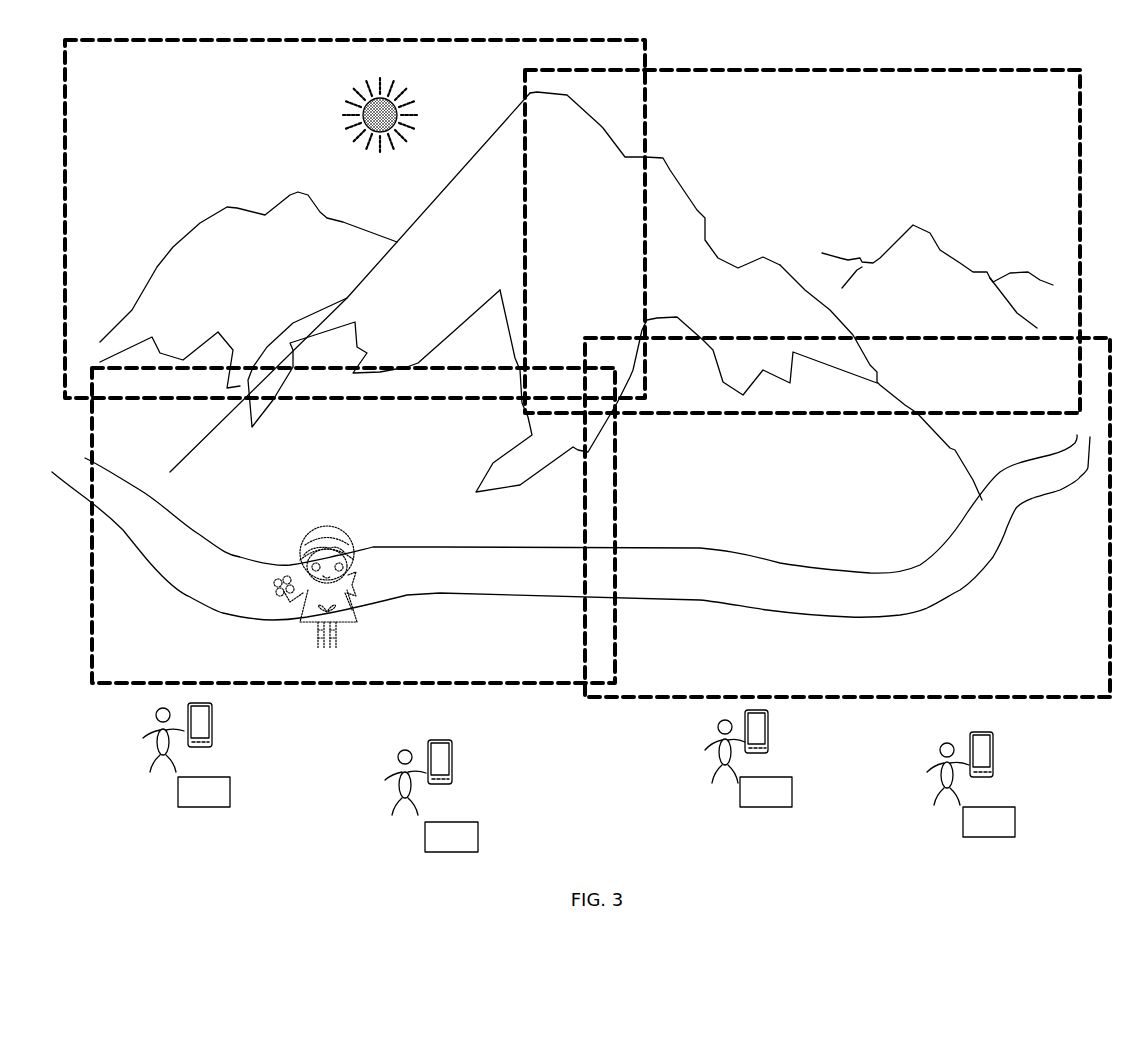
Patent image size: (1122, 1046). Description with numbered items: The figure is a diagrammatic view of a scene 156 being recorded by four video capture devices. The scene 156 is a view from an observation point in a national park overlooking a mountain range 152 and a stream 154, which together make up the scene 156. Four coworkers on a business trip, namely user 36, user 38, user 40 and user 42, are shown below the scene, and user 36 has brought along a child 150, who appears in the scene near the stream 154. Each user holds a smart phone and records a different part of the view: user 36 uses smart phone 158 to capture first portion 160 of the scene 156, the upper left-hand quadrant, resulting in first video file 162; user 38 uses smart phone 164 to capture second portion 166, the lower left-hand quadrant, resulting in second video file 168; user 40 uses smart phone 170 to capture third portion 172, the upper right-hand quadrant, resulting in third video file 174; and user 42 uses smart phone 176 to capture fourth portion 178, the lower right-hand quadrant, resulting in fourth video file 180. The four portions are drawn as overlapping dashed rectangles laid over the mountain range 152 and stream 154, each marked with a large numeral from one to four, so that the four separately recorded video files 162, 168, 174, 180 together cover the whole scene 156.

The scene 156 is at (968, 50).
The first portion 160 is at (65, 193).
The third portion 172 is at (1080, 162).
The second portion 166 is at (92, 642).
The fourth portion 178 is at (1110, 552).
The mountain range 152 is at (680, 188).
The stream 154 is at (963, 585).
The child 150 is at (348, 622).
The user 36 is at (143, 740).
The user 38 is at (393, 783).
The user 40 is at (712, 764).
The user 42 is at (936, 773).
The smart phone 158 is at (213, 733).
The smart phone 164 is at (453, 772).
The smart phone 170 is at (769, 733).
The smart phone 176 is at (993, 757).
The first video file 162 is at (204, 792).
The second video file 168 is at (451, 837).
The third video file 174 is at (766, 792).
The fourth video file 180 is at (989, 822).